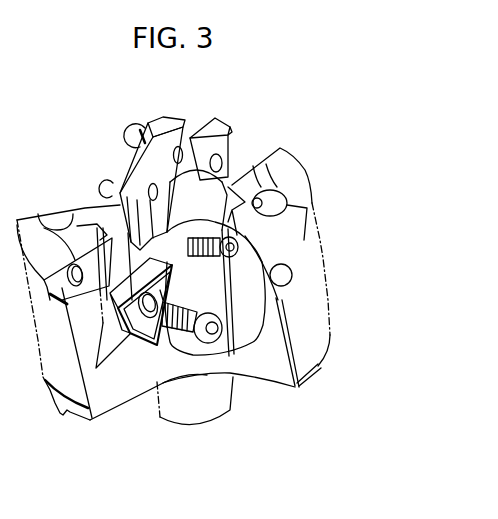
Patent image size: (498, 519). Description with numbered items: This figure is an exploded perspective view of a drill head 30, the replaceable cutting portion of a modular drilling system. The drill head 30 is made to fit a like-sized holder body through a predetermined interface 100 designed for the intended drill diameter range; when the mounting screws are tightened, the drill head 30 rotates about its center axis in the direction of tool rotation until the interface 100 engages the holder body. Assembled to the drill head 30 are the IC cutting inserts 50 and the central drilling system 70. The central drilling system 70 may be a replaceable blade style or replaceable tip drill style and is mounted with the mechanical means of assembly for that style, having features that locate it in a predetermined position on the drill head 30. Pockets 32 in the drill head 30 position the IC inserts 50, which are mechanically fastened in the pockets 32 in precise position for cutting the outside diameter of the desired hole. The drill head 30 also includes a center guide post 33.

The drill head 30 is at (334, 265).
The pockets 32 is at (72, 268).
The center guide post 33 is at (213, 427).
The IC cutting inserts 50 is at (142, 340).
The central drilling system 70 is at (165, 117).
The interface 100 is at (323, 383).